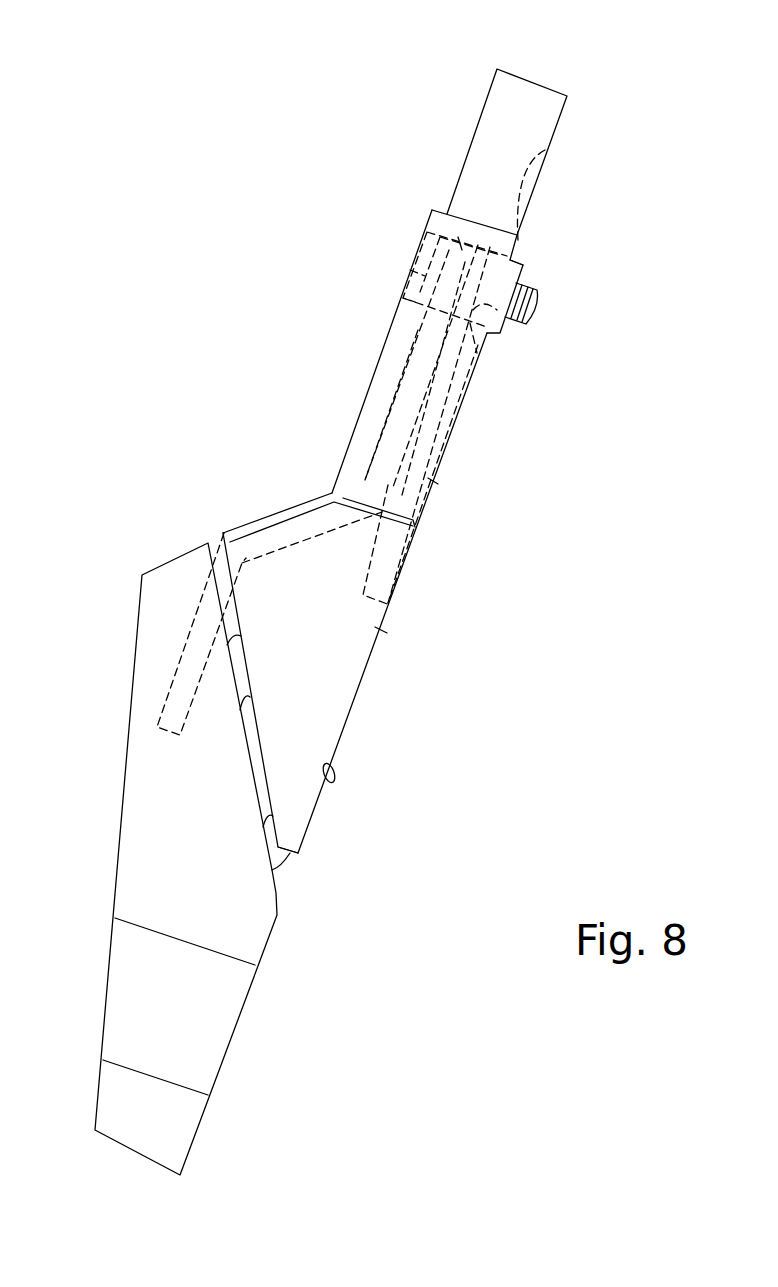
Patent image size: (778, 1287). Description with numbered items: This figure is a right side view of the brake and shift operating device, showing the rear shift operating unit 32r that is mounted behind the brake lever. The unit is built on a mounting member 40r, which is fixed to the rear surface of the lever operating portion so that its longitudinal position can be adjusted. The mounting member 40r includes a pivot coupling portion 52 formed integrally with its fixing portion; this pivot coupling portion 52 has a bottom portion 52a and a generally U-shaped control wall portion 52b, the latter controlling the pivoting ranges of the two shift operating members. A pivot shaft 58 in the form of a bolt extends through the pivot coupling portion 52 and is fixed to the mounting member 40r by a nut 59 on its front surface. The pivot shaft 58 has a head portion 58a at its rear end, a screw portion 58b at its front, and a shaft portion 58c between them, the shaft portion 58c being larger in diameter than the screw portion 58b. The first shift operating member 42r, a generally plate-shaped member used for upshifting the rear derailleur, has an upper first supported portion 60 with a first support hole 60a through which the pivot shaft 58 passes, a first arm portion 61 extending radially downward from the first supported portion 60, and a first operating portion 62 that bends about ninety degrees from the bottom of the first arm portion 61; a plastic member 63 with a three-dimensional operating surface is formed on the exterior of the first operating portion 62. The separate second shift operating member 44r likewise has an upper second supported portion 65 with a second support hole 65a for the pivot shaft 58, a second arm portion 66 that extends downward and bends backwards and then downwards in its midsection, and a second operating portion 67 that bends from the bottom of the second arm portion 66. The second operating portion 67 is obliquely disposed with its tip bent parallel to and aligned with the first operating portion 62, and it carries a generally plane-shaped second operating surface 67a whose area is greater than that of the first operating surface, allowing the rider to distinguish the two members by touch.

The rear shift operating unit 32r is at (420, 118).
The mounting member 40r is at (421, 168).
The first shift operating member 42r is at (370, 694).
The second shift operating member 44r is at (268, 975).
The pivot coupling portion 52 is at (348, 373).
The bottom portion 52a is at (445, 417).
The control wall portion 52b is at (372, 448).
The pivot shaft 58 is at (540, 280).
The head portion 58a is at (425, 240).
The screw portion 58b is at (540, 308).
The shaft portion 58c is at (472, 355).
The nut 59 is at (512, 263).
The first supported portion 60 is at (560, 140).
The first support hole 60a is at (497, 332).
The first arm portion 61 is at (433, 483).
The first operating portion 62 is at (380, 630).
The plastic member 63 is at (320, 712).
The second supported portion 65 is at (430, 215).
The second support hole 65a is at (405, 300).
The second arm portion 66 is at (376, 440).
The second operating portion 67 is at (148, 645).
The second operating surface 67a is at (205, 1060).